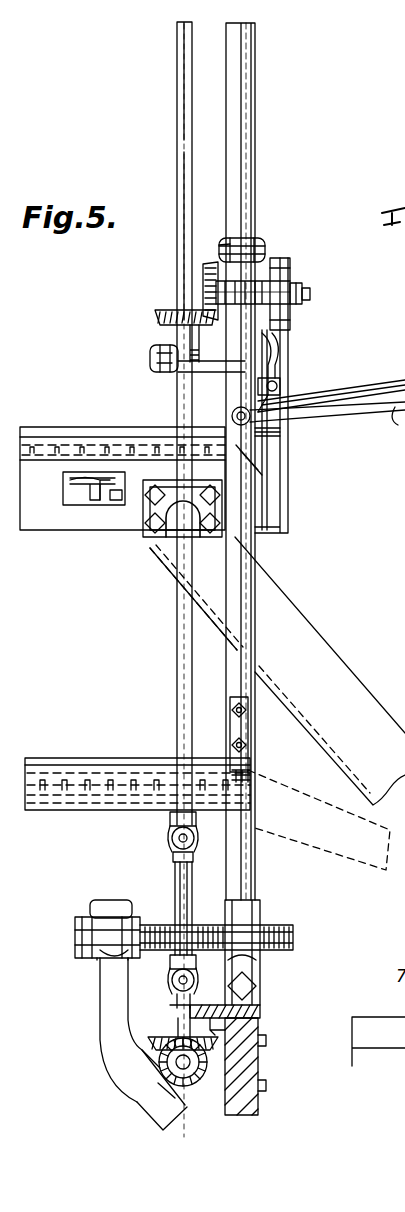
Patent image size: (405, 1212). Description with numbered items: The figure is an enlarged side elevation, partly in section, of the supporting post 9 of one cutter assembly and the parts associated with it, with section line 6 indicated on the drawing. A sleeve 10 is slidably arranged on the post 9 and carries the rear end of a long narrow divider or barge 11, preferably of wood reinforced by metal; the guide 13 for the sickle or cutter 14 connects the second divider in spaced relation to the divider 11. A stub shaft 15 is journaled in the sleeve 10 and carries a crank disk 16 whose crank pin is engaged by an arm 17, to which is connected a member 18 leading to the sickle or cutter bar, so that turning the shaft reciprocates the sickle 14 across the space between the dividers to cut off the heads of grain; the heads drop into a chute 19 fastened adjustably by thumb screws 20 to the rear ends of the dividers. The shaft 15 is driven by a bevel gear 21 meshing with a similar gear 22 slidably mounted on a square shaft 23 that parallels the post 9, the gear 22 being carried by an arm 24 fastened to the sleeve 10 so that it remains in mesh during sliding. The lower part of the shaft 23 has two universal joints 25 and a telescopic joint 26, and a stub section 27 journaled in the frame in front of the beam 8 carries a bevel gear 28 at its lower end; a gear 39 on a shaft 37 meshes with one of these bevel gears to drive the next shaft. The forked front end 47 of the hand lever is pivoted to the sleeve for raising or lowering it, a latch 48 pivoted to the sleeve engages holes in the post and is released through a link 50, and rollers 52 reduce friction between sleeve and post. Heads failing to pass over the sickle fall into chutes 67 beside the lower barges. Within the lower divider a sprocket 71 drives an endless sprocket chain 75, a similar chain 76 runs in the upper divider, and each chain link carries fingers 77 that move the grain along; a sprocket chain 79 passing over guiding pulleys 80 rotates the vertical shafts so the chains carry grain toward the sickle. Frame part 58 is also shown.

The section line 6 is at (186, 149).
The beam 8 is at (246, 1116).
The post 9 is at (243, 172).
The sleeve 10 is at (258, 278).
The divider or barge 11 is at (40, 472).
The guide 13 is at (93, 498).
The sickle or cutter 14 is at (90, 487).
The stub shaft 15 is at (310, 297).
The crank disk 16 is at (282, 283).
The arm 17 is at (299, 291).
The member 18 is at (283, 482).
The chute 19 is at (296, 642).
The thumb screws 20 is at (152, 561).
The bevel gear 21 is at (203, 302).
The gear 22 is at (172, 322).
The square shaft 23 is at (246, 250).
The arm 24 is at (202, 366).
The universal joints 25 is at (170, 840).
The telescopic joint 26 is at (180, 893).
The stub section 27 is at (178, 1018).
The bevel gear 28 is at (128, 1082).
The shaft 37 is at (150, 1110).
The gear 39 is at (193, 1088).
The forked front end 47 is at (295, 422).
The latch 48 is at (274, 405).
The link 50 is at (352, 393).
The rollers 52 is at (222, 245).
The lower box frame 58 is at (72, 812).
The chutes 67 is at (333, 848).
The sprocket 71 is at (197, 772).
The endless sprocket chain 75 is at (88, 772).
The chain 76 is at (86, 443).
The fingers 77 is at (266, 452).
The sprocket chain 79 is at (284, 926).
The guiding pulleys 80 is at (108, 940).